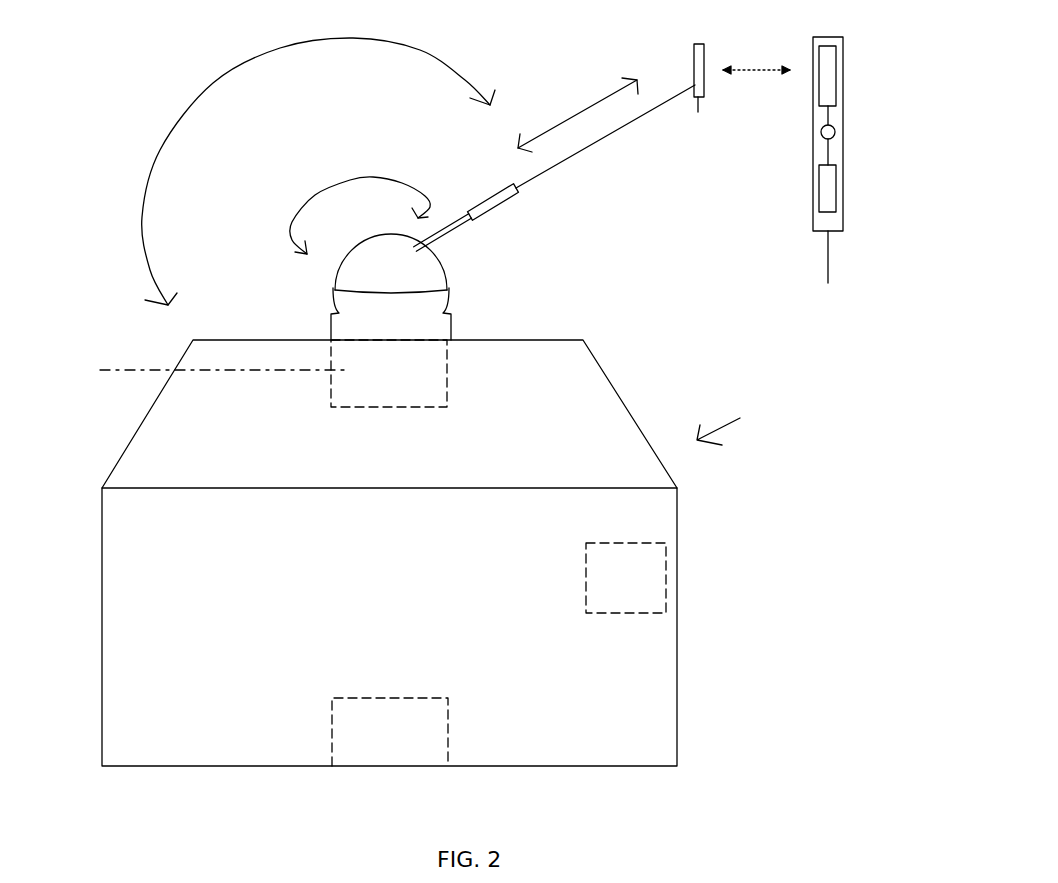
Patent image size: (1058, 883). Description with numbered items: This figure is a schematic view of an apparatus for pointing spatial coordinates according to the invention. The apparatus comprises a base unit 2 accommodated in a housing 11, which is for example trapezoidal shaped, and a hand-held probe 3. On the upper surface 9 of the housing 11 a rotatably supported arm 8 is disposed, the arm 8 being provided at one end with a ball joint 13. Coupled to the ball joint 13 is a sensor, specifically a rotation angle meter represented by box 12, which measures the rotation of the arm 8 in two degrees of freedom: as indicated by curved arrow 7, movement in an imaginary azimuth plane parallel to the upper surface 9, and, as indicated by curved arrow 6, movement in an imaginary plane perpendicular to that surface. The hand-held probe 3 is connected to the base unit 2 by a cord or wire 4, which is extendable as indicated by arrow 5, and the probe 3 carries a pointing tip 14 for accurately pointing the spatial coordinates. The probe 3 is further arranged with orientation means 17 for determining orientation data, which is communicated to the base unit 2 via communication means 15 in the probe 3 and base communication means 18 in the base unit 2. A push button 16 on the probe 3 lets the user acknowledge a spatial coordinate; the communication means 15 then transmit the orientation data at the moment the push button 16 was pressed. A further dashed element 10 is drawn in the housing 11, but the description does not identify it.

The base unit 2 is at (730, 425).
The hand-held probe 3 is at (705, 48).
The cord or wire 4 is at (595, 148).
The arrow 5 is at (578, 112).
The curved arrow 6 is at (215, 83).
The curved arrow 7 is at (352, 178).
The arm 8 is at (478, 217).
The upper surface 9 is at (562, 341).
The base 10 is at (357, 738).
The housing 11 is at (125, 608).
The rotation angle meter 12 is at (253, 373).
The ball joint 13 is at (357, 272).
The pointing tip 14 is at (700, 105).
The communication means 15 is at (828, 75).
The push button 16 is at (835, 132).
The orientation means 17 is at (828, 185).
The base communication means 18 is at (637, 585).